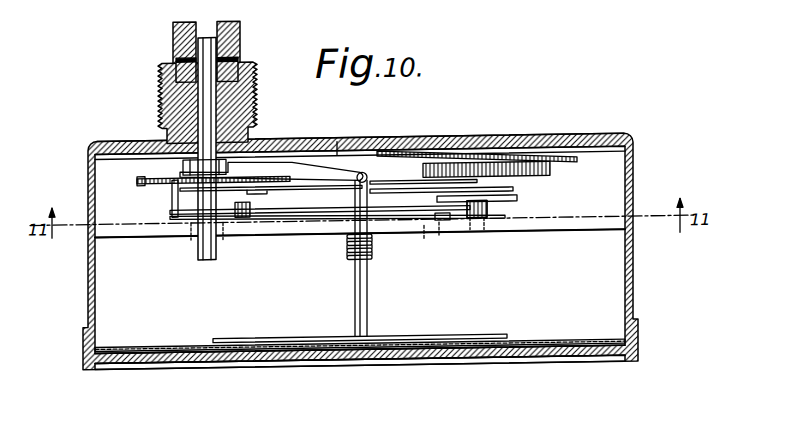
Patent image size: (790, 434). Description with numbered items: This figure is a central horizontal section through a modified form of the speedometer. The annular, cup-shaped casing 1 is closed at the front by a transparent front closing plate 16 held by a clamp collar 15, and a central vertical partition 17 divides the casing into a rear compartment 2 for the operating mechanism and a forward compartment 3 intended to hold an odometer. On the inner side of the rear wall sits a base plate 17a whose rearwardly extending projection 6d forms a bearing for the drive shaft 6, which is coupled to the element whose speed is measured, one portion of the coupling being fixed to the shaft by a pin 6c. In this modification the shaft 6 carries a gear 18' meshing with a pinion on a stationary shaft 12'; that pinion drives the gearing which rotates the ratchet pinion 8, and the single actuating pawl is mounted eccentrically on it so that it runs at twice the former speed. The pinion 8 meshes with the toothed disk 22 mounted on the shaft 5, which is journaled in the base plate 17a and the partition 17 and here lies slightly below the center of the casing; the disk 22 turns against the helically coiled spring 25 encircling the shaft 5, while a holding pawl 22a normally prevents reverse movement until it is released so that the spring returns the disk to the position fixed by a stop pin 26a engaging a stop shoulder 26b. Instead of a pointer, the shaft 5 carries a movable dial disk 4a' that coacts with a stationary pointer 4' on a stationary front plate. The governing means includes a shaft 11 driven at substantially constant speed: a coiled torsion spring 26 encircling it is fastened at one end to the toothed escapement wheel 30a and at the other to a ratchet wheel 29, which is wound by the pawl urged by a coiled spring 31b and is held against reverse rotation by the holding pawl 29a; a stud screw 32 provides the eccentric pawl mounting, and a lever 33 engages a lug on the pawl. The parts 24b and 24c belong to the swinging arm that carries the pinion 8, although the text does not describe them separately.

The casing 1 is at (93, 150).
The rear compartment 2 is at (600, 211).
The forward compartment 3 is at (597, 264).
The stationary pointer 4' is at (360, 323).
The disk 4a' is at (360, 326).
The shaft 5 is at (367, 297).
The shaft 6 is at (207, 43).
The pin 6c is at (240, 56).
The rearwardly extending projection 6d is at (254, 96).
The ratchet pinion 8 is at (243, 222).
The shaft 11 is at (487, 216).
The stationary shaft 12' is at (360, 129).
The clamp collar 15 is at (637, 358).
The front closing plate 16 is at (557, 367).
The central vertical partition 17 is at (110, 164).
The base plate 17a is at (110, 237).
The gear 18' is at (200, 193).
The toothed disk 22 is at (330, 217).
The holding pawl 22a is at (185, 222).
The hub 24b is at (182, 165).
The bracket 24c is at (173, 205).
The spring 25 is at (350, 268).
The coiled torsion spring 26 is at (550, 179).
The stop pin 26a is at (428, 236).
The stop shoulder 26b is at (447, 224).
The ratchet wheel 29 is at (515, 213).
The holding pawl 29a is at (293, 194).
The toothed wheel 30a is at (570, 174).
The coiled spring 31b is at (333, 177).
The stud screw 32 is at (255, 195).
The lever 33 is at (337, 158).